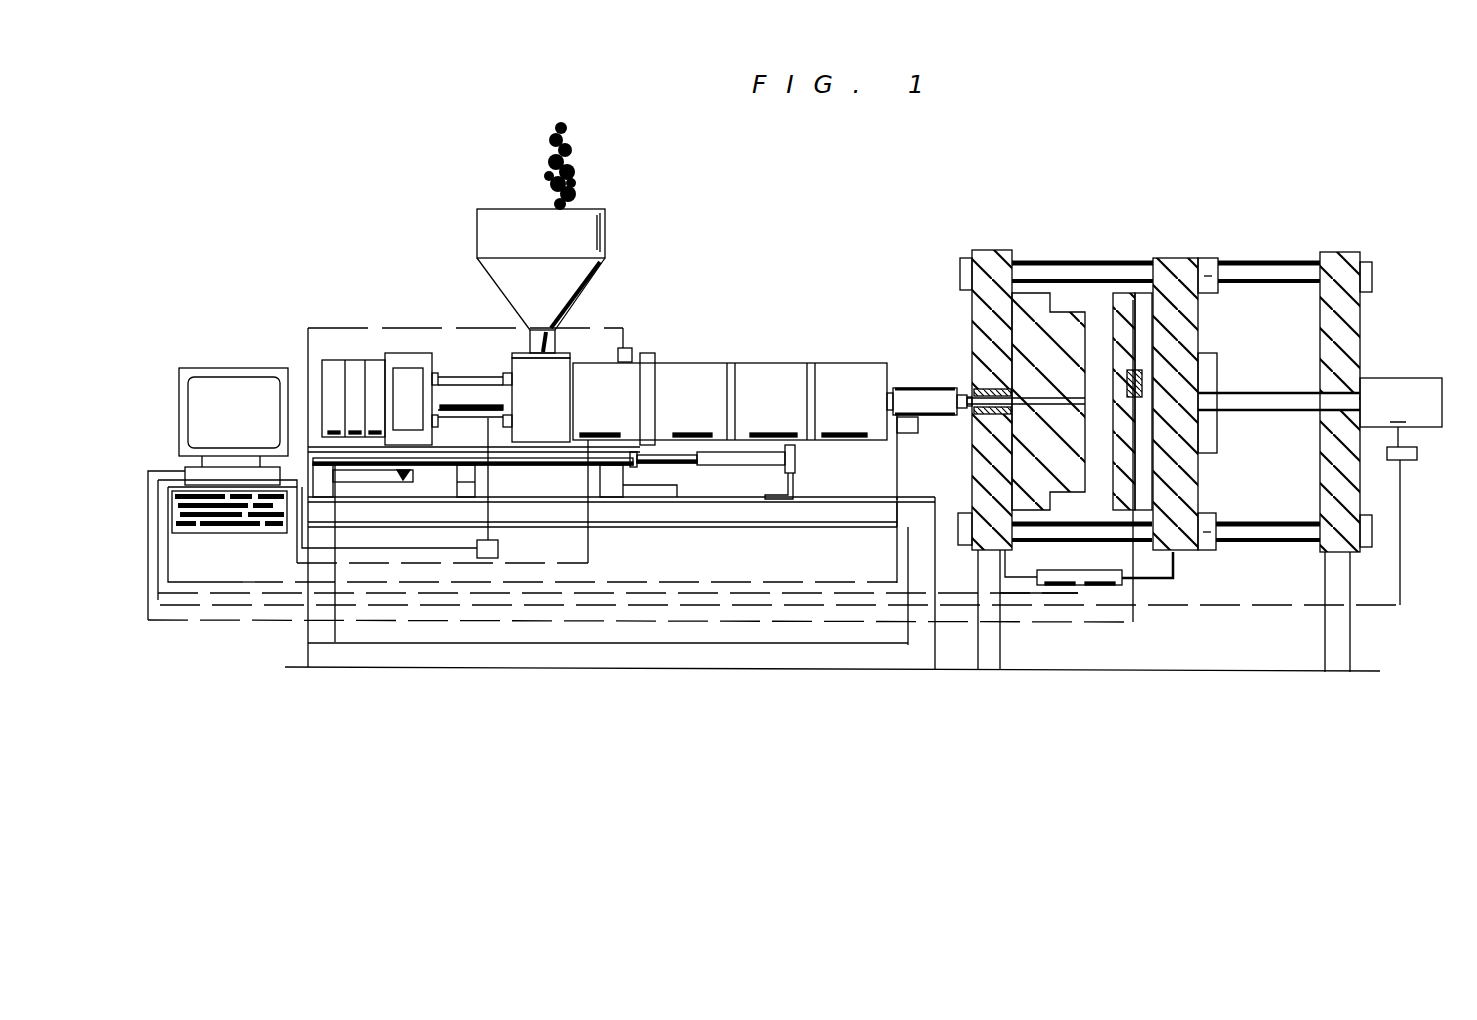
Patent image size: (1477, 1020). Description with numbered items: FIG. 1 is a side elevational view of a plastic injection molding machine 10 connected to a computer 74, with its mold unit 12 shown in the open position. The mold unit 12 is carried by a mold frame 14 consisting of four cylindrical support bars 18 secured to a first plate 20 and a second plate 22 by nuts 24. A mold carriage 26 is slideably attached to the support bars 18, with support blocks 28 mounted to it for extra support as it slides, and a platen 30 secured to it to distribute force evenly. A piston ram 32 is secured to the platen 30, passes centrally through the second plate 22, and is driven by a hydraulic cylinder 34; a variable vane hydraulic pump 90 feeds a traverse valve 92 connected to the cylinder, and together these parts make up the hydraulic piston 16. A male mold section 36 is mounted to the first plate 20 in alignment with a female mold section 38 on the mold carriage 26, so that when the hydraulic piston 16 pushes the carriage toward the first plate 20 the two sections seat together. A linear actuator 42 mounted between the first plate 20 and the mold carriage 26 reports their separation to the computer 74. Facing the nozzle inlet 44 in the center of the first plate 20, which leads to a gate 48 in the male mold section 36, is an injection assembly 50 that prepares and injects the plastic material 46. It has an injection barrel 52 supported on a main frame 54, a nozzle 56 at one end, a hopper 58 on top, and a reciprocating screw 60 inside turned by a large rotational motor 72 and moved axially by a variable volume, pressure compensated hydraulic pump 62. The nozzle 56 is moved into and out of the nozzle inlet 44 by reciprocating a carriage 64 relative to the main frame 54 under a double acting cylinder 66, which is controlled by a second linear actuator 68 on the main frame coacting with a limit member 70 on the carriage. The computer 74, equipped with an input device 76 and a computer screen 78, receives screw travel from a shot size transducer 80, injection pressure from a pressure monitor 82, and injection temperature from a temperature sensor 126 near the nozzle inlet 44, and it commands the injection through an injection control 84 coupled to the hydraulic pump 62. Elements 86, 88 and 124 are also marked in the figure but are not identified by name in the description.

The plastic injection molding machine 10 is at (1028, 175).
The mold unit 12 is at (1088, 252).
The mold frame 14 is at (1112, 544).
The hydraulic piston 16 is at (1394, 321).
The cylindrical support bars 18 is at (1268, 266).
The first plate 20 is at (990, 252).
The second plate 22 is at (1340, 252).
The nuts 24 is at (960, 275).
The mold carriage 26 is at (1176, 258).
The support blocks 28 is at (1206, 258).
The platen 30 is at (1215, 447).
The piston ram 32 is at (1265, 405).
The hydraulic cylinder 34 is at (1397, 390).
The male mold section 36 is at (1040, 296).
The female mold section 38 is at (1120, 300).
The linear actuator 42 is at (1090, 583).
The nozzle inlet 44 is at (968, 390).
The plastic material 46 is at (575, 160).
The gate 48 is at (1010, 456).
The injection assembly 50 is at (828, 322).
The injection barrel 52 is at (766, 375).
The main frame 54 is at (725, 655).
The nozzle 56 is at (918, 388).
The hopper 58 is at (506, 232).
The reciprocating screw 60 is at (463, 372).
The variable volume, pressure compensated hydraulic pump 62 is at (600, 368).
The carriage 64 is at (310, 367).
The double acting cylinder 66 is at (343, 493).
The second linear actuator 68 is at (792, 457).
The limit member 70 is at (625, 470).
The rotational motor 72 is at (355, 375).
The computer 74 is at (185, 471).
The input device 76 is at (210, 535).
The computer screen 78 is at (208, 388).
The shot size transducer 80 is at (478, 540).
The pressure monitor 82 is at (630, 348).
The injection control 84 is at (603, 440).
The mold cavity 86 is at (1087, 356).
The cavity sensor 88 is at (1113, 355).
The variable vane hydraulic pump 90 is at (1410, 465).
The traverse valve 92 is at (1408, 449).
The mold sensor 124 is at (1133, 300).
The temperature sensor 126 is at (902, 432).